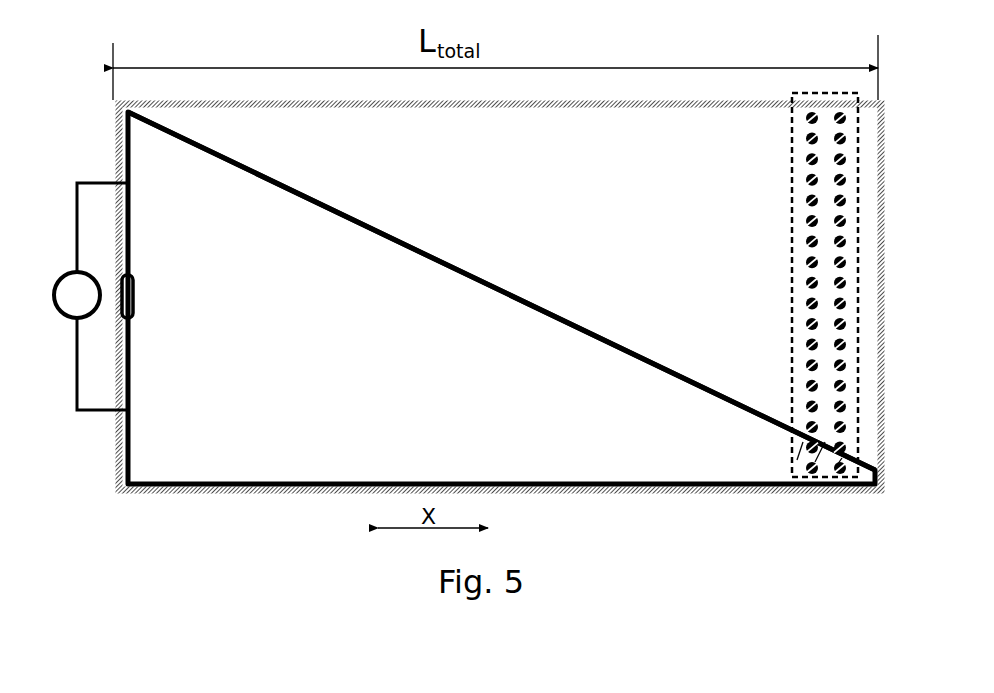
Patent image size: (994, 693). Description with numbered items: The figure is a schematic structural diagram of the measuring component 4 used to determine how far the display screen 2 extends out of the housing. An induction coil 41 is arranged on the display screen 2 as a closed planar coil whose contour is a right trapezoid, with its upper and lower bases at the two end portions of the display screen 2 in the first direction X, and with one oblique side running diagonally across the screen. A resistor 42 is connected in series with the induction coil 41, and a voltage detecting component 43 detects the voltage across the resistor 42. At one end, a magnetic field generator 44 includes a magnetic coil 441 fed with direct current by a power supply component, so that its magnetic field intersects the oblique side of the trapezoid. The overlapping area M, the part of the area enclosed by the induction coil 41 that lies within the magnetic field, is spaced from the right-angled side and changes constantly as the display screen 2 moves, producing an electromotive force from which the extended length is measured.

The display screen 2 is at (335, 143).
The measuring component 4 is at (100, 463).
The induction coil 41 is at (383, 237).
The resistor 42 is at (137, 294).
The voltage detecting component 43 is at (68, 313).
The magnetic field generator 44 is at (861, 208).
The magnetic coil 441 is at (860, 256).
The overlapping area M is at (830, 467).